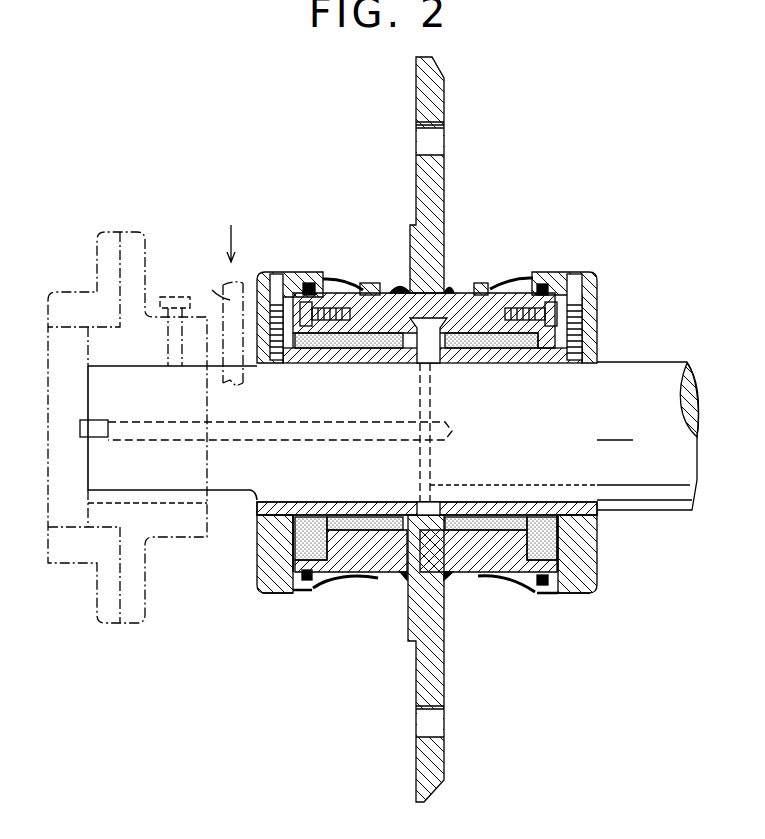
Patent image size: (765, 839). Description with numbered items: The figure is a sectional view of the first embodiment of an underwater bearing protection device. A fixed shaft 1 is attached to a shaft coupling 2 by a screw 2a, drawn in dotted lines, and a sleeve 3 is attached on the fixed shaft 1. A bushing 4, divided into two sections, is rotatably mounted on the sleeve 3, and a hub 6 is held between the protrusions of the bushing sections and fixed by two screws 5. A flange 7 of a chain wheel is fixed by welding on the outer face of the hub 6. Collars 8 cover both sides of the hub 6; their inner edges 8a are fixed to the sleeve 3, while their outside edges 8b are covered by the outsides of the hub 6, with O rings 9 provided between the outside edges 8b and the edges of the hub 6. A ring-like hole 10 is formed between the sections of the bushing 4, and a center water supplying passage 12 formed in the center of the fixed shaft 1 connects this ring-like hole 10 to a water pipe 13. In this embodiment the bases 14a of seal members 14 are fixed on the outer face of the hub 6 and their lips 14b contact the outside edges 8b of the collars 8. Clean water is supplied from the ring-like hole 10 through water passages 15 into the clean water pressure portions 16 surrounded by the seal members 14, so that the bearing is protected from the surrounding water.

The fixed shaft 1 is at (655, 372).
The shaft coupling 2 is at (95, 300).
The screw 2a is at (178, 298).
The sleeve 3 is at (538, 362).
The bushing 4 is at (485, 350).
The screws 5 is at (310, 352).
The hub 6 is at (405, 305).
The flange 7 is at (430, 88).
The collars 8 is at (245, 577).
The inner edges 8a is at (268, 518).
The outside edges 8b is at (280, 593).
The O rings 9 is at (300, 290).
The ring-like hole 10 is at (422, 345).
The center water supplying passage 12 is at (320, 430).
The water pipe 13 is at (212, 300).
The seal members 14 is at (347, 604).
The bases 14a is at (373, 582).
The lips 14b is at (327, 590).
The water passages 15 is at (361, 295).
The clean water pressure portions 16 is at (338, 280).